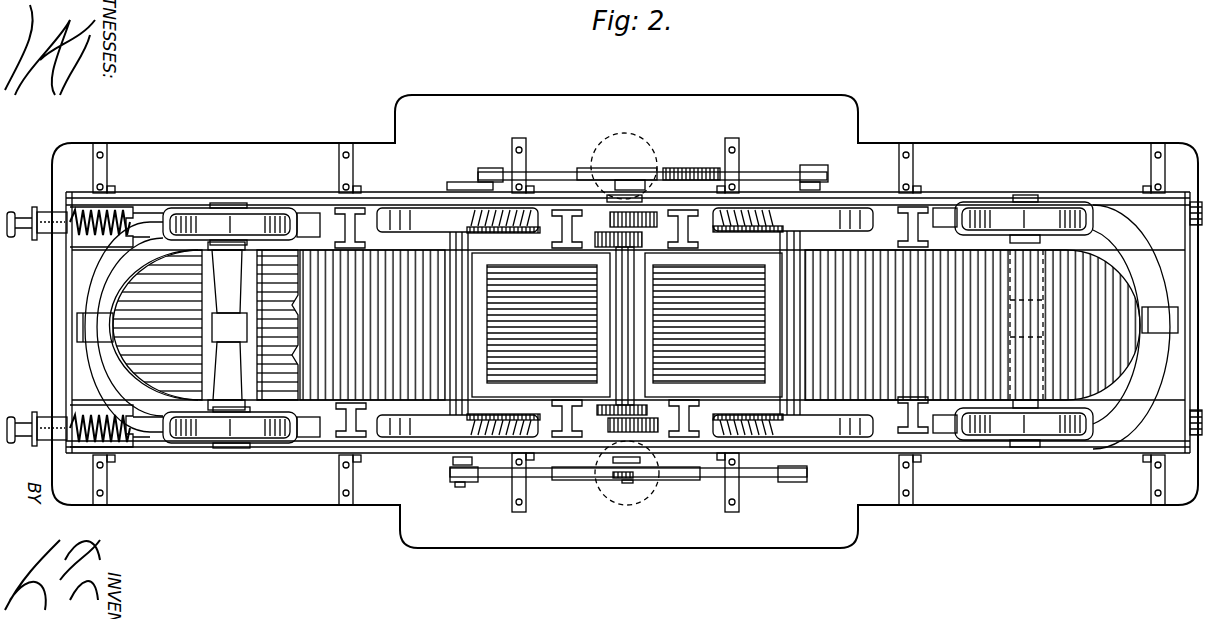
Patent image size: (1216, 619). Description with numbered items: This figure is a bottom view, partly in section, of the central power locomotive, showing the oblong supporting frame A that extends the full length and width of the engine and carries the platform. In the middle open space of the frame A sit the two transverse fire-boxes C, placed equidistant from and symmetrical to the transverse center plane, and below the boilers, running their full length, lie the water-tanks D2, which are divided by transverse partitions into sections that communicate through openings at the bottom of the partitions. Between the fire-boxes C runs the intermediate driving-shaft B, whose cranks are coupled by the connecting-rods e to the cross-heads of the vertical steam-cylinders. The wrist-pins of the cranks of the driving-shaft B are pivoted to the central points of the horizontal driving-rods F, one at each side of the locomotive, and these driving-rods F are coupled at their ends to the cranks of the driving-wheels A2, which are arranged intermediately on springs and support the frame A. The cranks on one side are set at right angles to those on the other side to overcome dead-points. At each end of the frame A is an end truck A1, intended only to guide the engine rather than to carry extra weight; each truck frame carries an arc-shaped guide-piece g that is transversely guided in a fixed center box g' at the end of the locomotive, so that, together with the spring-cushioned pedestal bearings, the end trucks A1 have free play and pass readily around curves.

The frame A is at (625, 321).
The end truck A1 is at (641, 321).
The driving-wheels A2 is at (638, 323).
The intermediate driving-shaft B is at (626, 321).
The fire-boxes C is at (627, 325).
The water-tanks D2 is at (624, 326).
The driving-rods F is at (637, 320).
The connecting-rods e is at (626, 485).
The arc-shaped guide-piece g is at (624, 327).
The fixed center box g' is at (627, 324).